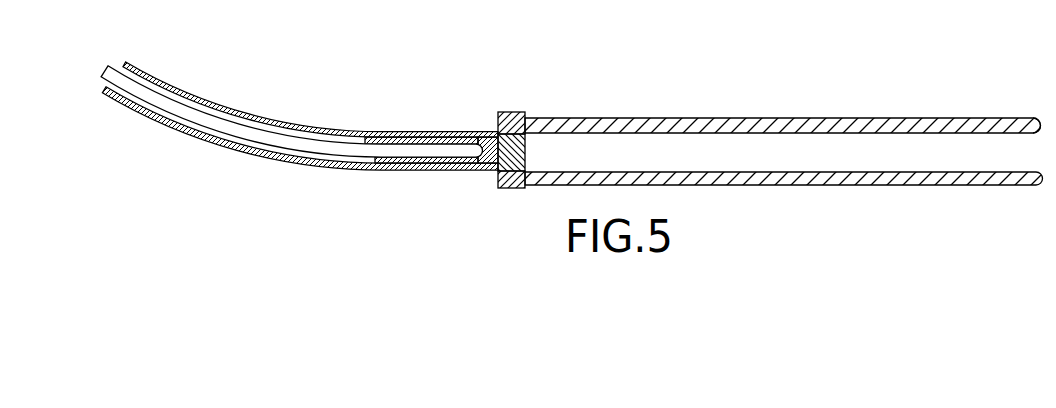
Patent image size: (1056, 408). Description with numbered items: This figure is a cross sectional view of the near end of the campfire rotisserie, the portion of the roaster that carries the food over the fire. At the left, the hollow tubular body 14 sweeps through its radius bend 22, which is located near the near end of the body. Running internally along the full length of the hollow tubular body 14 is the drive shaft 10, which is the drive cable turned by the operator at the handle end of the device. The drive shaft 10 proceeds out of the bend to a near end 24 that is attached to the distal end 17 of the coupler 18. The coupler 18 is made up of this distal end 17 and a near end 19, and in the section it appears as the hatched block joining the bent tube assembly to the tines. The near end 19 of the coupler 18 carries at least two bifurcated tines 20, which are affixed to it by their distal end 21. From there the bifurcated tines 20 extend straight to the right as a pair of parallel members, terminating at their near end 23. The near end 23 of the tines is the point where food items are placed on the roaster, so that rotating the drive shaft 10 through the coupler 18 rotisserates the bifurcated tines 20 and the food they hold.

The drive shaft 10 is at (165, 107).
The hollow tubular body 14 is at (231, 112).
The distal end of coupler 17 is at (377, 138).
The coupler 18 is at (473, 167).
The near end of coupler 19 is at (517, 152).
The bifurcated tines 20 is at (898, 128).
The distal end of bifurcated tines 21 is at (533, 125).
The radius bend 22 is at (240, 153).
The near end of bifurcated tines 23 is at (1028, 122).
The near end of drive shaft 24 is at (437, 150).